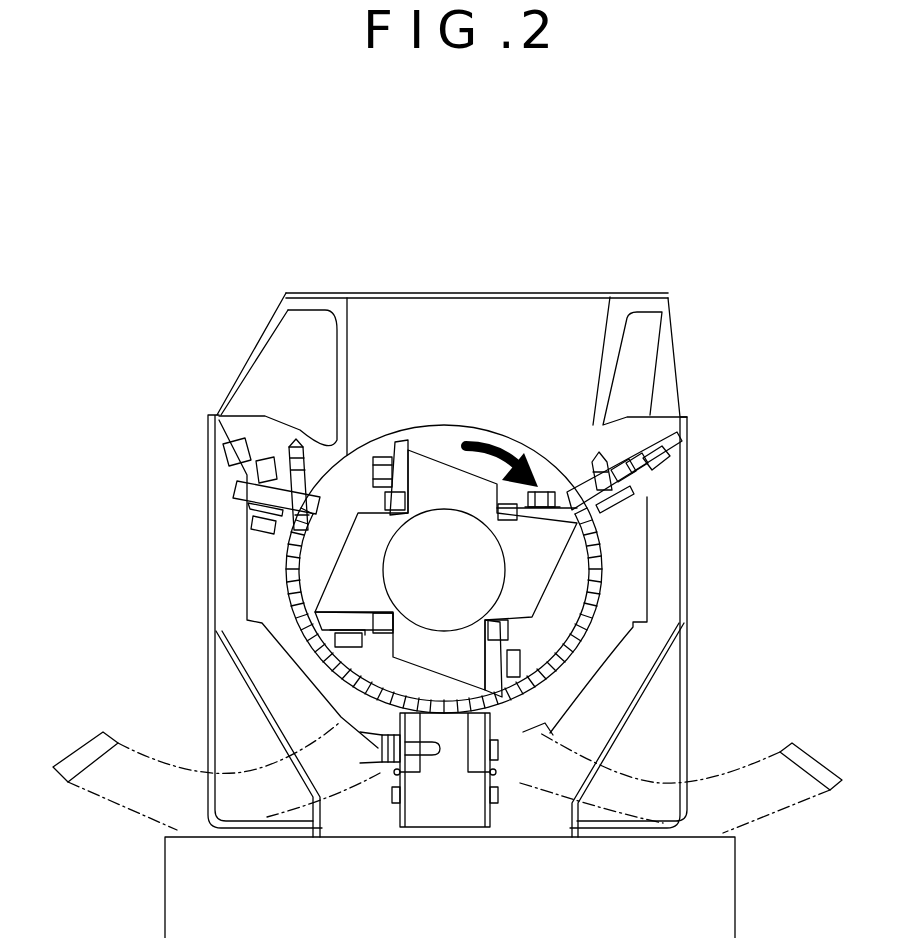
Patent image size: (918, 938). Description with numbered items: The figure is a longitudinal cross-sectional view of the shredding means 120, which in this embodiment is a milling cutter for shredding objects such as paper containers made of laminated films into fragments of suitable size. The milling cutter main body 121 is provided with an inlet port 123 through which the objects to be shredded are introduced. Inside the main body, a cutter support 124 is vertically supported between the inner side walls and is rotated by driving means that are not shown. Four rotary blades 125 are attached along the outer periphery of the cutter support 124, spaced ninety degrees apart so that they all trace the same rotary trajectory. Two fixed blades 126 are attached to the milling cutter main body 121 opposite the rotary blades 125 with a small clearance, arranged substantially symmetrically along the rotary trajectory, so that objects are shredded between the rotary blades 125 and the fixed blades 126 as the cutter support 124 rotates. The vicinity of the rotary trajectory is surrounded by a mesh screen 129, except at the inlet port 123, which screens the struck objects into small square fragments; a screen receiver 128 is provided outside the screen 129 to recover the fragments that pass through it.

The shredding means 120 is at (695, 297).
The milling cutter main body 121 is at (658, 403).
The inlet port 123 is at (371, 295).
The cutter support 124 is at (440, 448).
The rotary blades 125 is at (397, 440).
The fixed blades 126 is at (562, 488).
The rotor 128 is at (565, 572).
The screen 129 is at (597, 613).